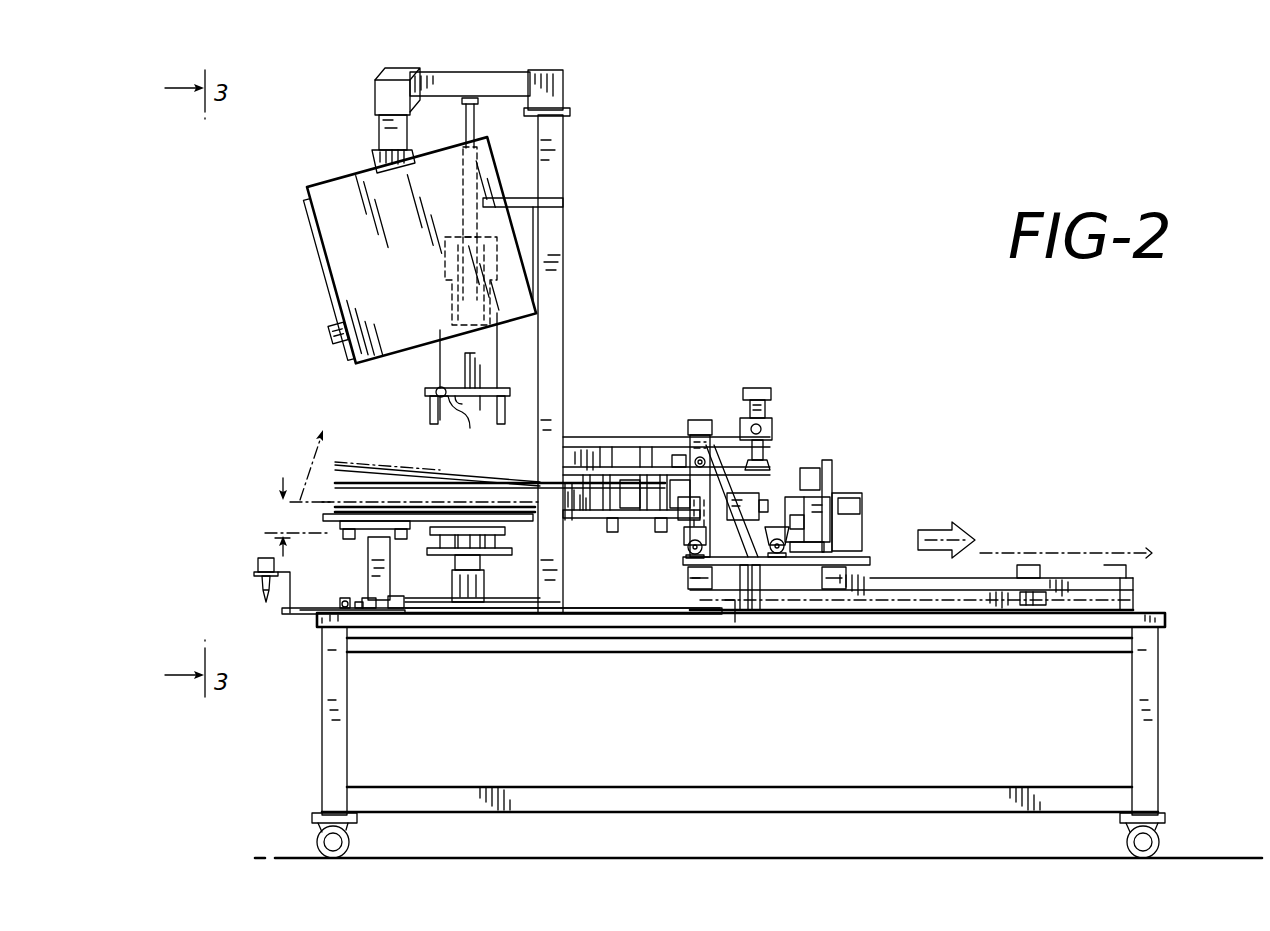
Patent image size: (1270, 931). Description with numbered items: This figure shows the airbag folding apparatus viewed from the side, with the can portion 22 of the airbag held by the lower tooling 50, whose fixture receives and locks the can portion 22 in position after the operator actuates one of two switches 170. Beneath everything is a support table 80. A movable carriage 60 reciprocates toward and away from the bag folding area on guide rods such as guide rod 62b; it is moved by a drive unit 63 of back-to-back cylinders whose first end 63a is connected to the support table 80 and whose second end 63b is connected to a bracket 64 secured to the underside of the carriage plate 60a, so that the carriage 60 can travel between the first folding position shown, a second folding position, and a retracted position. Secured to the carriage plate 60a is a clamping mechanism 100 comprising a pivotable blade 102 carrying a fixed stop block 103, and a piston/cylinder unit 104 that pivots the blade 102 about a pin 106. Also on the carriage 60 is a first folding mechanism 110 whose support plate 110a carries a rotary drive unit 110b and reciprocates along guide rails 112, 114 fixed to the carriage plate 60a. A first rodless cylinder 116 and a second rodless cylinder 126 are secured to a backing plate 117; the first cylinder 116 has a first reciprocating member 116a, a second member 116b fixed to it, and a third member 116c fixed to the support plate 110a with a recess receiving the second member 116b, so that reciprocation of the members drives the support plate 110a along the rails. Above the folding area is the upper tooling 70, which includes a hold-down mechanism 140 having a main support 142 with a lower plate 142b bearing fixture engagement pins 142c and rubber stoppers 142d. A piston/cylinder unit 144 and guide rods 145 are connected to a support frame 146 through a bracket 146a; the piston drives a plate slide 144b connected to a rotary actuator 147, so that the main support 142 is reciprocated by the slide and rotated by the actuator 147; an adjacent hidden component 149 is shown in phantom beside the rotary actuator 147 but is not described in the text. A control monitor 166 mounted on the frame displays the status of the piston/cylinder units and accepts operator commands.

The can portion 22 is at (460, 520).
The lower tooling 50 is at (396, 575).
The movable carriage 60 is at (865, 466).
The carriage plate 60a is at (870, 560).
The guide rod 62b is at (988, 576).
The drive unit 63 is at (440, 617).
The first end 63a is at (360, 617).
The second end 63b is at (735, 600).
The bracket 64 is at (512, 630).
The upper tooling 70 is at (507, 372).
The support table 80 is at (335, 772).
The clamping mechanism 100 is at (708, 402).
The pivotable blade 102 is at (625, 440).
The stop block 103 is at (703, 422).
The piston/cylinder unit 104 is at (772, 395).
The pin 106 is at (705, 455).
The first folding mechanism 110 is at (771, 491).
The support plate 110a is at (758, 570).
The rotary drive unit 110b is at (687, 530).
The guide rail 112 is at (688, 550).
The guide rail 114 is at (760, 570).
The first rodless cylinder 116 is at (812, 520).
The first reciprocating member 116a is at (845, 505).
The second member 116b is at (862, 500).
The third member 116c is at (803, 550).
The backing plate 117 is at (832, 470).
The second rodless cylinder 126 is at (815, 470).
The hold-down mechanism 140 is at (428, 357).
The main support 142 is at (495, 345).
The second lower plate 142b is at (432, 388).
The fixture engagement pins 142c is at (512, 410).
The rubber stoppers 142d is at (468, 430).
The piston/cylinder unit 144 is at (478, 100).
The plate slide 144b is at (527, 244).
The guide rods 145 is at (481, 118).
The support frame 146 is at (560, 135).
The bracket 146a is at (528, 200).
The rotary actuator 147 is at (520, 266).
The hidden body 149 is at (530, 305).
The control monitor 166 is at (332, 222).
The switch 170 is at (264, 556).